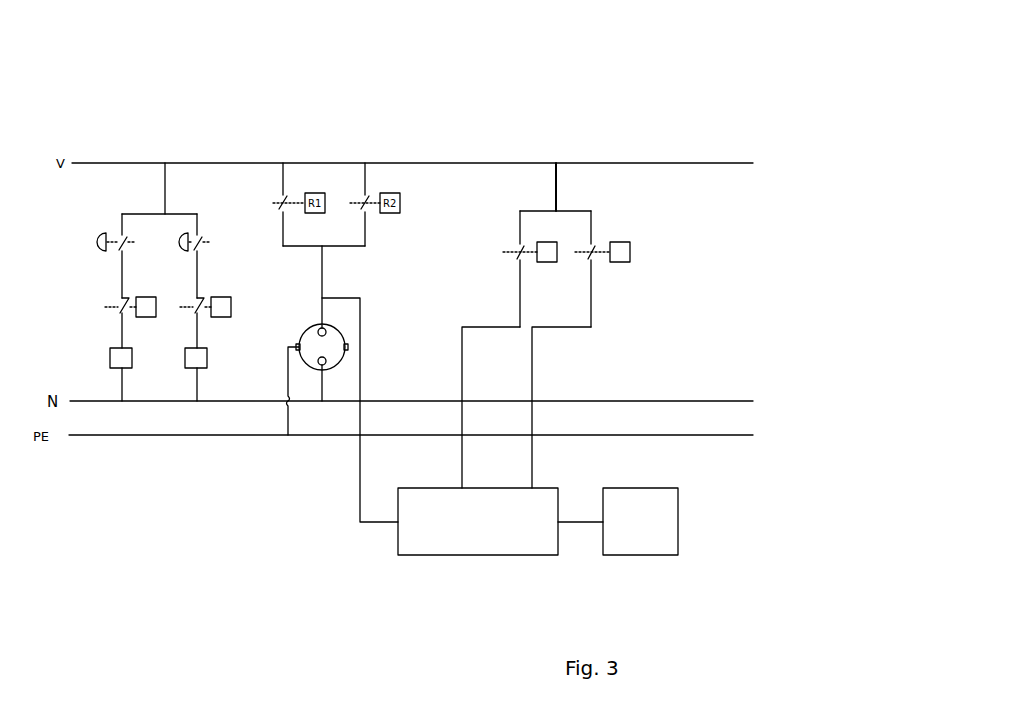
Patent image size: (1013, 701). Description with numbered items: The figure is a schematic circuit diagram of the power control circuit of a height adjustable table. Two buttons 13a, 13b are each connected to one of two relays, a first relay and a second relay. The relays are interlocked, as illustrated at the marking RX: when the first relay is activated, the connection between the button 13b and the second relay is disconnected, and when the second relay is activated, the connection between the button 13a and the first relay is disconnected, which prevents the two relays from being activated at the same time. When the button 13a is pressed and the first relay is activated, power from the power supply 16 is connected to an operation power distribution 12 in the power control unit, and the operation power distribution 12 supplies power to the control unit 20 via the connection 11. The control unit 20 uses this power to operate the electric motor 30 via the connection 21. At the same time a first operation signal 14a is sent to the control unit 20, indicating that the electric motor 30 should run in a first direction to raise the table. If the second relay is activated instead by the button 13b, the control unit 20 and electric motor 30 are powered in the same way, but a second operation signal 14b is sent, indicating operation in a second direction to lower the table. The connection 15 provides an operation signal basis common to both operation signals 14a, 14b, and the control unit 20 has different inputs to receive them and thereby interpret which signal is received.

The power supply 16 is at (50, 120).
The button 13a is at (93, 244).
The button 13b is at (183, 232).
The marking RX is at (86, 311).
The operation power distribution 12 is at (322, 298).
The connection 11 is at (358, 474).
The connection 15 is at (557, 193).
The first operation signal 14a is at (474, 327).
The second operation signal 14b is at (591, 318).
The control unit 20 is at (458, 555).
The connection 21 is at (585, 522).
The electric motor 30 is at (645, 555).